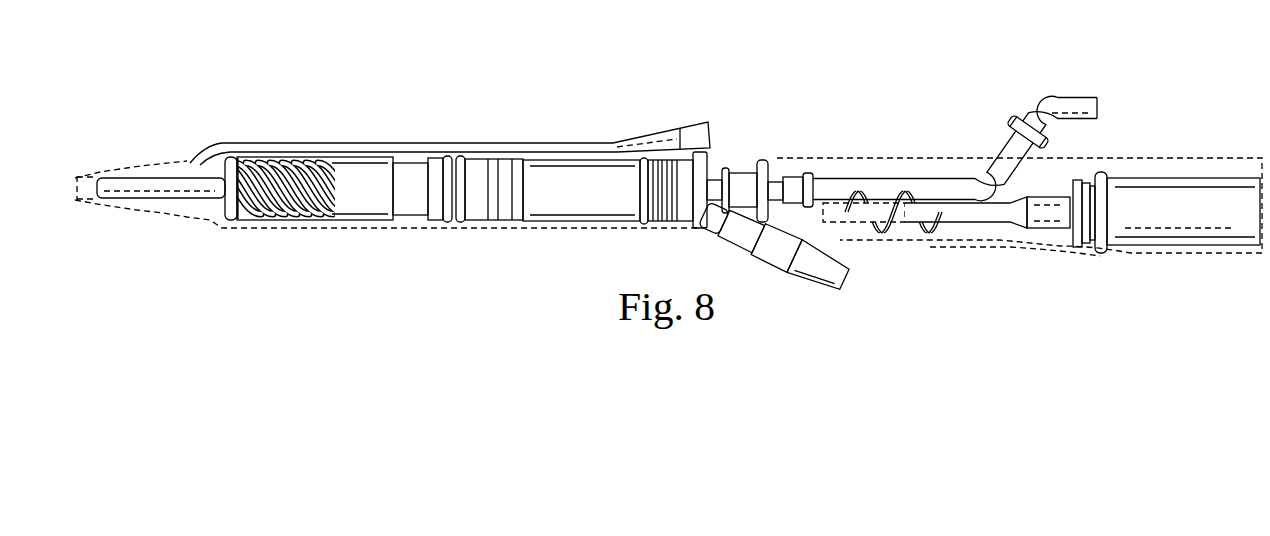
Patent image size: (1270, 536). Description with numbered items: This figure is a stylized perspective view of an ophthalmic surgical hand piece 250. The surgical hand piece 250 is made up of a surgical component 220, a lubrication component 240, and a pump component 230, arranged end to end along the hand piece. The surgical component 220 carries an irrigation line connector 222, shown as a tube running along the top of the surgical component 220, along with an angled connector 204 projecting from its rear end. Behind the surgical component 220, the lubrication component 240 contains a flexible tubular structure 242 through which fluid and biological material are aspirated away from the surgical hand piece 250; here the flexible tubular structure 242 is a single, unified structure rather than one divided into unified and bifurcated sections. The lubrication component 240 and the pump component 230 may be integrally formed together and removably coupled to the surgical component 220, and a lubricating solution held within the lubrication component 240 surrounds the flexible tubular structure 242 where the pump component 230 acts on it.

The surgical hand piece 250 is at (407, 62).
The irrigation line connector 222 is at (518, 143).
The surgical component 220 is at (409, 258).
The angled connector port 204 is at (801, 284).
The flexible tubular structure 242 is at (848, 177).
The lubrication component 240 is at (940, 266).
The pump component 230 is at (1192, 281).